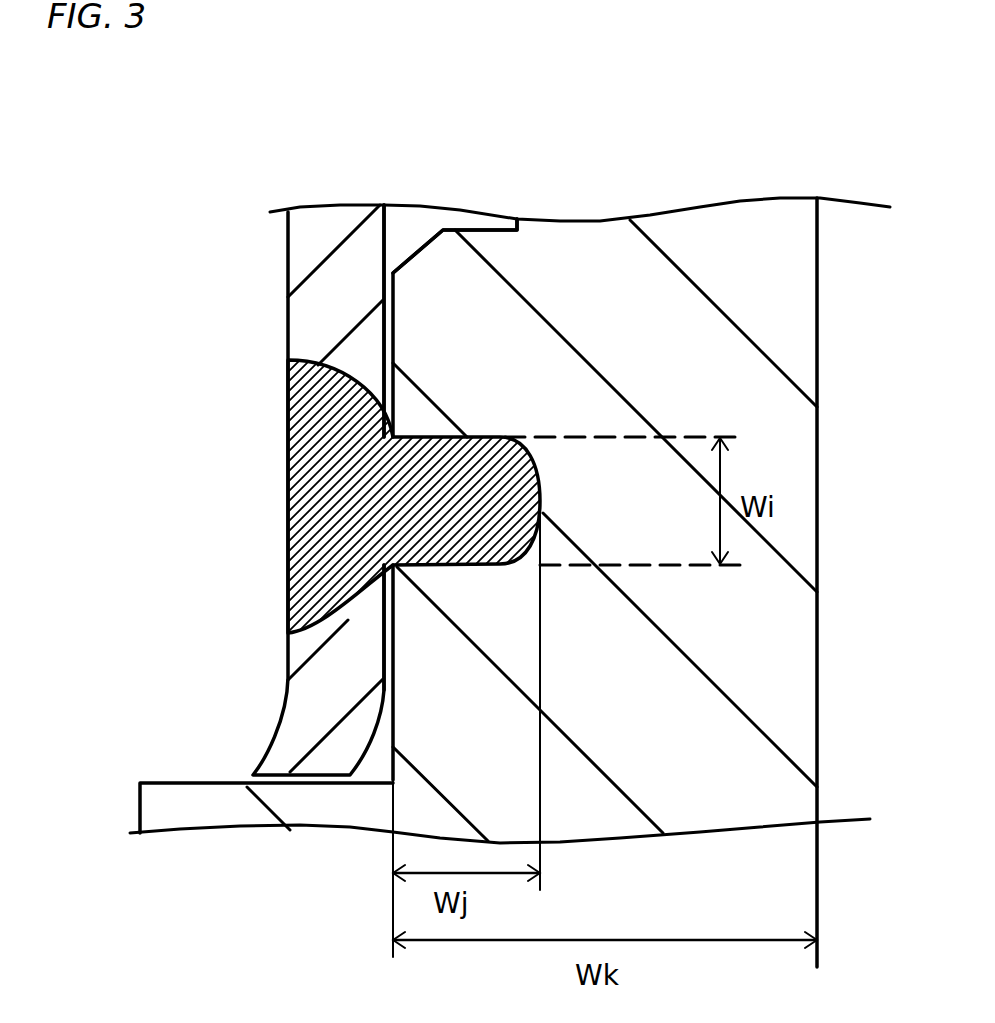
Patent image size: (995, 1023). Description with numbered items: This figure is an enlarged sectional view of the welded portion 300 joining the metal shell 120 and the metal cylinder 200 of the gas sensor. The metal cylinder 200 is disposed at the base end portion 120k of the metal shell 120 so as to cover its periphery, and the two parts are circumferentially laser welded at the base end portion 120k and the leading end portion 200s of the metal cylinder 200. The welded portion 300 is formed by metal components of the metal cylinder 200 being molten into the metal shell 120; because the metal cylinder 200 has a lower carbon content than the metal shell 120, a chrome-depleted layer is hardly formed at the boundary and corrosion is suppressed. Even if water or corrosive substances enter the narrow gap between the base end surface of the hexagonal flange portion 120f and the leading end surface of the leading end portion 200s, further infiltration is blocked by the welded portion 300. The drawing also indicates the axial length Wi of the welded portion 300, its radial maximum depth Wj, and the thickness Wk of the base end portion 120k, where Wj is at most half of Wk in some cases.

The metal cylinder 200 is at (242, 180).
The leading end portion 200s is at (337, 232).
The metal shell 120 is at (648, 178).
The base end portion 120k is at (548, 265).
The hexagonal flange portion 120f is at (175, 800).
The welded portion 300 is at (333, 503).